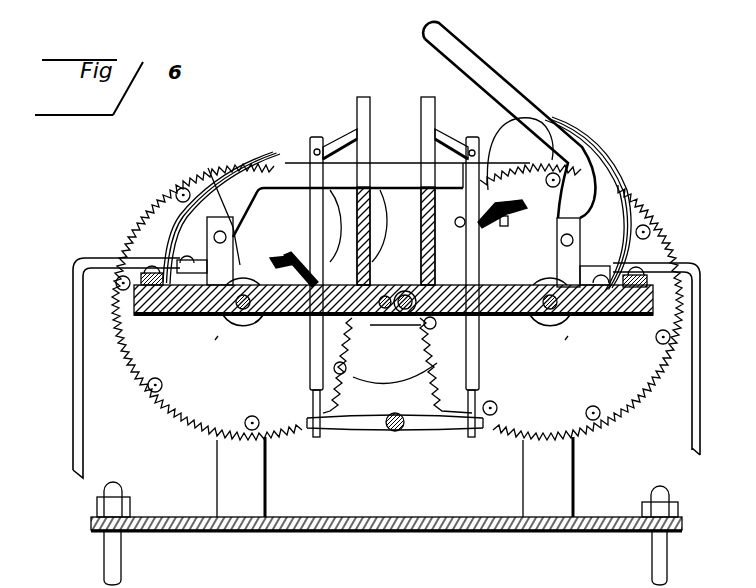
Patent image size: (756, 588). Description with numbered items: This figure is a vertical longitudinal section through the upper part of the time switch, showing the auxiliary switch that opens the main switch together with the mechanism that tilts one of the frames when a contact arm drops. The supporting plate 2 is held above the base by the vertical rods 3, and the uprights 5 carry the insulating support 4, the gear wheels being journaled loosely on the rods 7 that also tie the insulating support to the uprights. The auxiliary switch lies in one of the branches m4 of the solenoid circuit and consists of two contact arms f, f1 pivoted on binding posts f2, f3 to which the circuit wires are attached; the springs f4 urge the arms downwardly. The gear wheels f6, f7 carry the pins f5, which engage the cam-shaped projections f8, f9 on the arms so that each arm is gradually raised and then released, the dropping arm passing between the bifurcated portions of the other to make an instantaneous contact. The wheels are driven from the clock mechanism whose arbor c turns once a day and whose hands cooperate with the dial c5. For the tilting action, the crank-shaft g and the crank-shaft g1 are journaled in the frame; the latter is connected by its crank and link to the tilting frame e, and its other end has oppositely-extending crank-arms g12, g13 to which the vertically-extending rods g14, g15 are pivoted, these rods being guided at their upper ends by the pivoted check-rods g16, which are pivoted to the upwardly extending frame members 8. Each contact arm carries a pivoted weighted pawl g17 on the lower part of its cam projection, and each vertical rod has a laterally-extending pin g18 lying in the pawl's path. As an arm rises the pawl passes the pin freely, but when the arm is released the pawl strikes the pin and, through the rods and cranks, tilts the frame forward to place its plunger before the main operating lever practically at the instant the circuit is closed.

The supporting plate 2 is at (427, 535).
The vertical rods 3 is at (107, 543).
The insulating support 4 is at (494, 284).
The uprights 5 is at (395, 477).
The rods or shafts 7 is at (253, 325).
The upwardly extending frame members 8 is at (428, 97).
The branches of circuit m4 is at (73, 314).
The contact arm f is at (408, 177).
The contact arm f1 is at (500, 72).
The binding post f2 is at (200, 318).
The binding post f3 is at (597, 320).
The springs f4 is at (210, 187).
The pins f5 is at (190, 447).
The gear wheel f6 is at (561, 351).
The gear wheel f7 is at (211, 350).
The cam-shaped projection f8 is at (464, 143).
The cam-shaped projection f9 is at (392, 173).
The crank-shaft g is at (398, 284).
The crank-shaft g1 is at (393, 431).
The crank-arm g12 is at (350, 420).
The crank-arm g13 is at (453, 424).
The vertically-extending rod g14 is at (307, 147).
The vertically-extending rod g15 is at (494, 168).
The check-rods g16 is at (343, 143).
The weighted pawl g17 is at (280, 257).
The pin g18 is at (313, 227).
The tilting frame e is at (337, 365).
The shaft or arbor c is at (446, 365).
The dial c5 is at (395, 367).